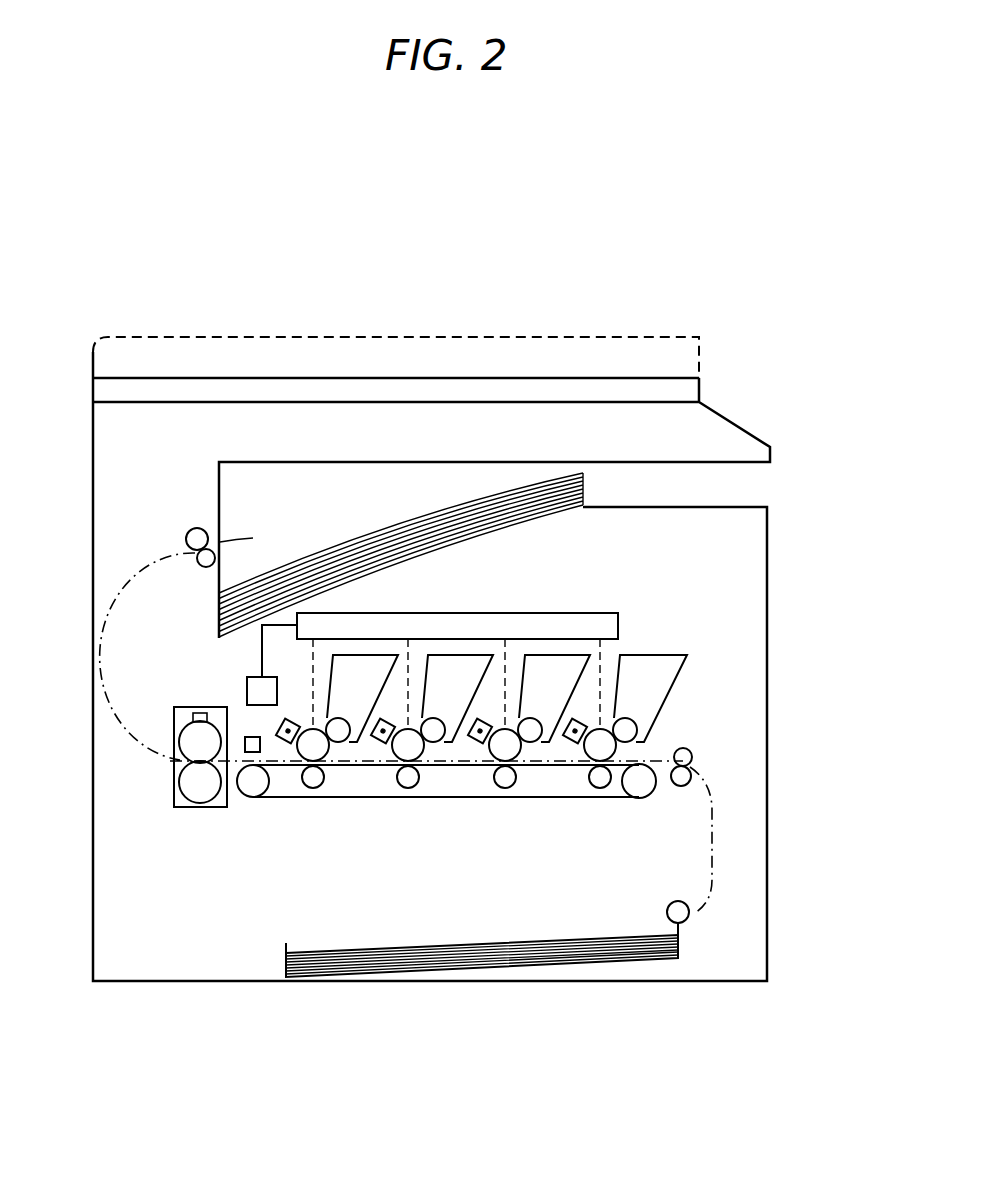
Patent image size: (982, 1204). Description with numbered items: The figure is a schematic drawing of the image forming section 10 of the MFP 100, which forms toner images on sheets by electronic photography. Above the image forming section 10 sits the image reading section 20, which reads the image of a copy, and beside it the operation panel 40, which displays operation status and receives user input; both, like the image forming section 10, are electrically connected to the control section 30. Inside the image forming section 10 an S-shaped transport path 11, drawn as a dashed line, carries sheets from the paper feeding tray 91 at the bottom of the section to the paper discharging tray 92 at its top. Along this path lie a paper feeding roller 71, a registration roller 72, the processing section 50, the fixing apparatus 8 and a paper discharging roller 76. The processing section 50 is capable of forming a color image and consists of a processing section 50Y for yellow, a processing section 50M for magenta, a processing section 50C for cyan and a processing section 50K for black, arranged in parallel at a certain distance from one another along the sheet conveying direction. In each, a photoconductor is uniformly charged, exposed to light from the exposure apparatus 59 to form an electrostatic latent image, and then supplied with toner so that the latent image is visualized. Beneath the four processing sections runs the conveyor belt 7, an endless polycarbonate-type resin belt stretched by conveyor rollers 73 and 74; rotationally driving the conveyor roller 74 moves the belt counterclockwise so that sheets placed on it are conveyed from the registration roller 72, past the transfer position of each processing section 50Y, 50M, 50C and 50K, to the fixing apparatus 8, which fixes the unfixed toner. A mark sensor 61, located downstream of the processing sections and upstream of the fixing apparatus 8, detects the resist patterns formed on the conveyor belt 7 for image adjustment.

The MFP 100 is at (637, 304).
The image reading section 20 is at (192, 337).
The operation panel 40 is at (751, 424).
The image forming section 10 is at (736, 566).
The paper discharging roller 76 is at (197, 528).
The paper discharging tray 92 is at (375, 530).
The exposure apparatus 59 is at (565, 612).
The control section 30 is at (255, 677).
The mark sensor 61 is at (250, 737).
The fixing apparatus 8 is at (200, 808).
The conveyor roller 74 is at (256, 785).
The conveyor belt 7 is at (290, 800).
The processing section 50Y is at (341, 812).
The processing section 50M is at (423, 812).
The processing section 50C is at (520, 812).
The processing section 50K is at (602, 812).
The processing section 50 is at (602, 867).
The registration roller 72 is at (683, 757).
The conveyor roller 73 is at (643, 790).
The paper feeding roller 71 is at (668, 912).
The transport path 11 is at (726, 826).
The paper feeding tray 91 is at (520, 966).